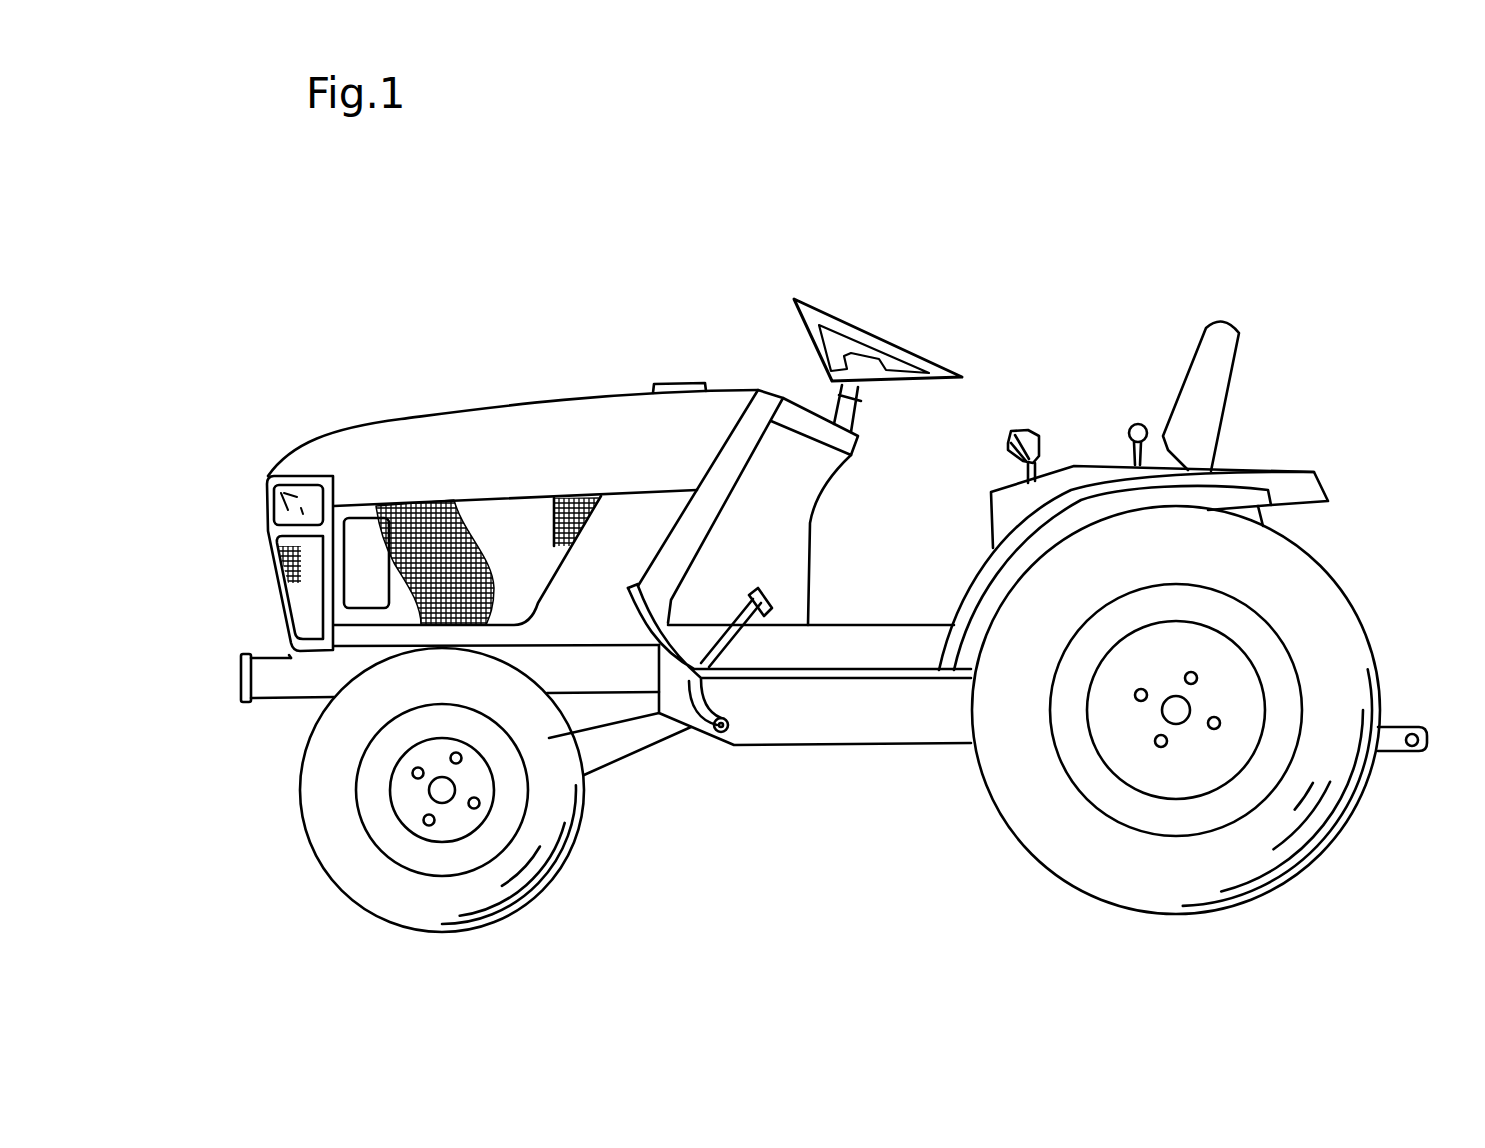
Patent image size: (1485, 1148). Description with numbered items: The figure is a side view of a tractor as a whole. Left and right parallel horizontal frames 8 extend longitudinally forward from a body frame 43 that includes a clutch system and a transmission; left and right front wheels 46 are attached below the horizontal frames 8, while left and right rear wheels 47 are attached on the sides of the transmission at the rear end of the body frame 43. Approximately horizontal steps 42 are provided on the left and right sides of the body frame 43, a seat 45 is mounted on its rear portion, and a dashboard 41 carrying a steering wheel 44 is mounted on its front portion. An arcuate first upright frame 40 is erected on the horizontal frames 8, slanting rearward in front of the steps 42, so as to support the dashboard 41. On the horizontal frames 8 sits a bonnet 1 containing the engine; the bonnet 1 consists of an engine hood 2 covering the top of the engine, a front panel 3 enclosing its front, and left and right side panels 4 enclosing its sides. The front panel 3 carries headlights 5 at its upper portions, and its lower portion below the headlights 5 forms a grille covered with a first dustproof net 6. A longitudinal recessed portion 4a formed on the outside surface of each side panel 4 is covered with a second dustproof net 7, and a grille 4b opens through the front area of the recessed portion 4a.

The bonnet 1 is at (389, 341).
The engine hood 2 is at (498, 467).
The front panel 3 is at (296, 478).
The side panel 4 is at (597, 566).
The recessed portion 4a is at (508, 556).
The grille 4b is at (362, 533).
The headlight 5 is at (272, 498).
The first dustproof net 6 is at (283, 573).
The second dustproof net 7 is at (463, 537).
The horizontal frame 8 is at (297, 690).
The first upright frame 40 is at (733, 461).
The dashboard 41 is at (820, 500).
The step 42 is at (738, 680).
The body frame 43 is at (835, 742).
The steering wheel 44 is at (898, 337).
The seat 45 is at (1190, 372).
The front wheel 46 is at (583, 822).
The rear wheel 47 is at (1010, 829).